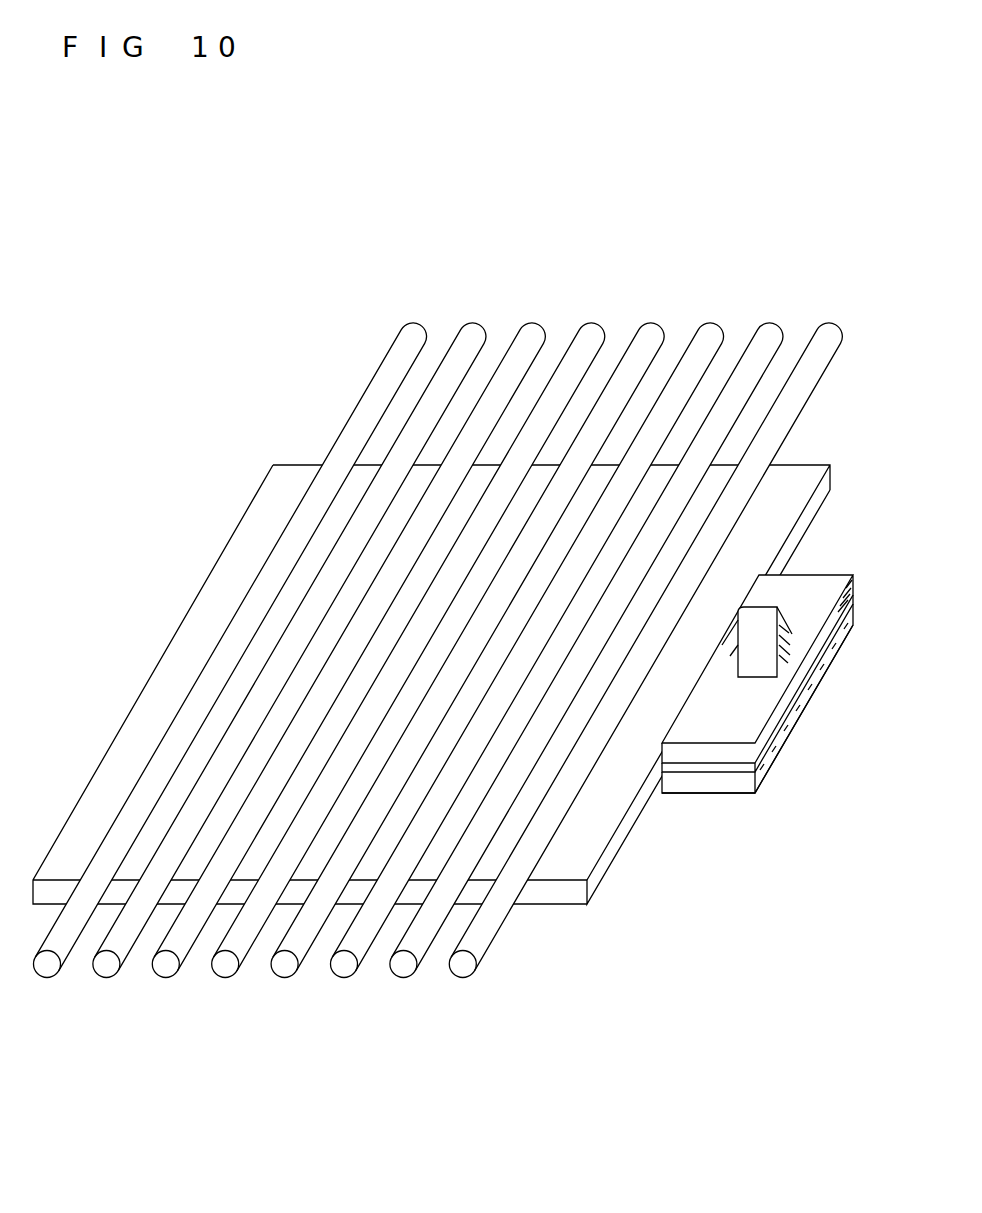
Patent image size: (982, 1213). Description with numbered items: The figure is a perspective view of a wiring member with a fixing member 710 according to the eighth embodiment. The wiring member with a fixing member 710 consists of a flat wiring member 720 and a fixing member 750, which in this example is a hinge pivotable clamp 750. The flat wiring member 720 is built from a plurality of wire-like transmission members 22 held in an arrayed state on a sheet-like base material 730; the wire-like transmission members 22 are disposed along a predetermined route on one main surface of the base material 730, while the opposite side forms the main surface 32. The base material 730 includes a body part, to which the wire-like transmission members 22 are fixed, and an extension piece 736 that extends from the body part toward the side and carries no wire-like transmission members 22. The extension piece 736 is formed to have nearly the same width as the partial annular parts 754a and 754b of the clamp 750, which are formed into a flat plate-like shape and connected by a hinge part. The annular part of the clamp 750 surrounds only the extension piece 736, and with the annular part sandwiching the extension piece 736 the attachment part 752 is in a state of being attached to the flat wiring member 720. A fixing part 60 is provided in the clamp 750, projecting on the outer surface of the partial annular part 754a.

The wiring member with a fixing member 710 is at (465, 614).
The flat wiring member 720 is at (437, 708).
The base material 730 is at (434, 736).
The main surface 32 is at (807, 480).
The wire-like transmission members 22 is at (533, 1043).
The hinge pivotable clamp 750 is at (779, 702).
The partial annular part 754b is at (827, 585).
The extension piece 736 is at (807, 692).
The partial annular part 754a is at (792, 733).
The attachment part 752 is at (765, 780).
The fixing part 60 is at (782, 619).